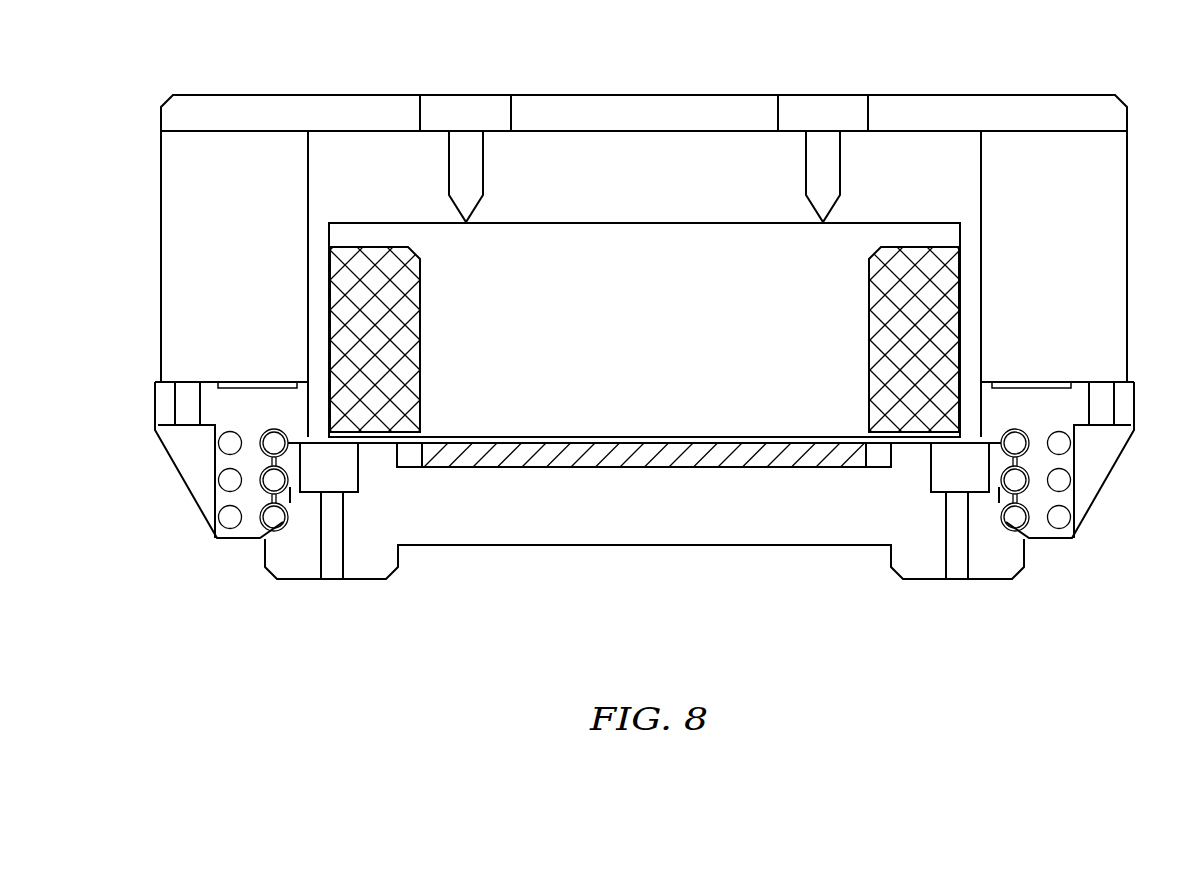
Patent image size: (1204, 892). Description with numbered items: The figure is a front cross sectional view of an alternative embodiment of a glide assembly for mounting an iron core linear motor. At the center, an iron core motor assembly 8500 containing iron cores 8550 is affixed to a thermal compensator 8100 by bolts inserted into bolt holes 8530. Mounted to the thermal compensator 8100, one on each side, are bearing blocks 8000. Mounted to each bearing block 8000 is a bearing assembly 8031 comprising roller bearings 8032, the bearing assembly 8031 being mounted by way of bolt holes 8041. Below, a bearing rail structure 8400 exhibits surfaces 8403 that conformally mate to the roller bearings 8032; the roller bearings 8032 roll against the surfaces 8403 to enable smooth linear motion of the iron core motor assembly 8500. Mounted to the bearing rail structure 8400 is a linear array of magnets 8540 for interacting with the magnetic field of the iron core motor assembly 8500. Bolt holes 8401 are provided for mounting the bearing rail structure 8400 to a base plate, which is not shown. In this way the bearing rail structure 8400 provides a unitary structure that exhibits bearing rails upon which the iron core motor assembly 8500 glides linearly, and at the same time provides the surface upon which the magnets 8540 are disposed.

The bearing block 8000 is at (214, 165).
The thermal compensator 8100 is at (389, 116).
The iron core motor assembly 8500 is at (589, 168).
The bolt hole 8530 is at (826, 153).
The iron core 8550 is at (397, 320).
The linear array of magnets 8540 is at (556, 464).
The bearing rail structure 8400 is at (633, 528).
The bolt hole 8401 is at (330, 566).
The surface 8403 is at (296, 516).
The bearing assembly 8031 is at (266, 406).
The roller bearing 8032 is at (267, 519).
The bolt hole 8041 is at (201, 467).